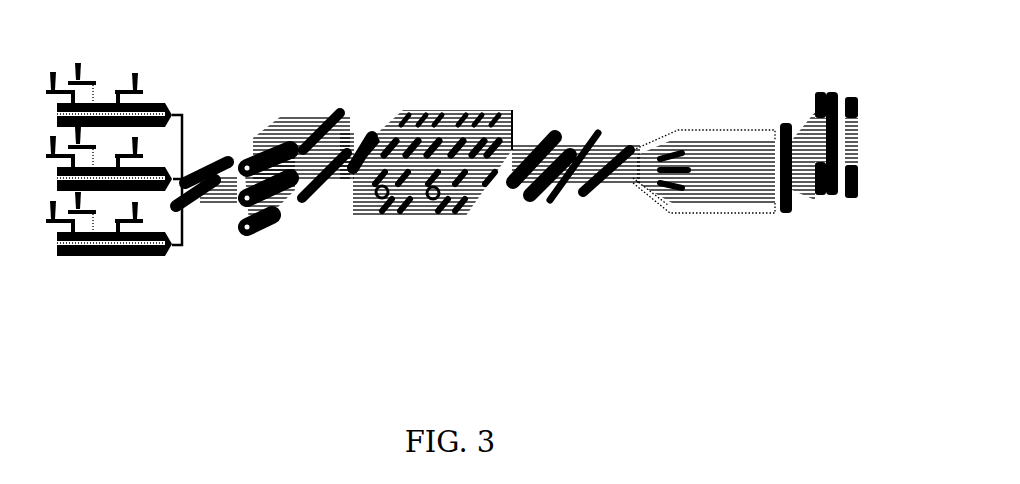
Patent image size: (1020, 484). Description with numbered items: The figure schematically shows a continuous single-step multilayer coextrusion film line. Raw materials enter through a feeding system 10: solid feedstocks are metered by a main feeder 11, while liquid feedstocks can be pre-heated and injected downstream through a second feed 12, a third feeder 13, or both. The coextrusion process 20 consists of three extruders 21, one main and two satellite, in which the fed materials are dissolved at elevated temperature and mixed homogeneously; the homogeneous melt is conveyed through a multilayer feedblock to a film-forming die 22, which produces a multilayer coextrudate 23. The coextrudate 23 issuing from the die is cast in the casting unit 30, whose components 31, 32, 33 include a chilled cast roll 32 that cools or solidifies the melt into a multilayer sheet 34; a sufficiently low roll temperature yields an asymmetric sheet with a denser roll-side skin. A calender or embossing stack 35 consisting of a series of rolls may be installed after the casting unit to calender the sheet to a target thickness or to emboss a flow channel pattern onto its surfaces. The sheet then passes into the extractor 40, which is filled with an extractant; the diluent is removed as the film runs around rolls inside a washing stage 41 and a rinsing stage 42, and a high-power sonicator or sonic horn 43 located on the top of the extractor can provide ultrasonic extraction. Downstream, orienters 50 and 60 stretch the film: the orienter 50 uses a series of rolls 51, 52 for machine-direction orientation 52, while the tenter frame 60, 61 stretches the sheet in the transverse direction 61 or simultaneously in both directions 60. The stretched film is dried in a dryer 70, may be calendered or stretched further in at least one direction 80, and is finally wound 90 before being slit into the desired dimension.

The feeding system 10 is at (107, 70).
The main feeder 11 is at (55, 71).
The second feed 12 is at (93, 151).
The third feeder 13 is at (137, 156).
The coextrusion process 20 is at (103, 263).
The extruders 21 is at (158, 258).
The film-forming die 22 is at (200, 174).
The coextrudate 23 is at (197, 197).
The casting unit 30 is at (254, 220).
The casting unit component 31 is at (259, 229).
The cast roll 32 is at (240, 201).
The casting unit component 33 is at (285, 114).
The multilayer sheet 34 is at (305, 122).
The calender or embossing stack 35 is at (312, 203).
The extractor 40 is at (432, 176).
The washing stage 41 is at (423, 101).
The rinsing stage 42 is at (493, 101).
The sonicator 43 is at (380, 199).
The orienter 50 is at (571, 208).
The roll 51 is at (527, 206).
The machine direction orientation roll 52 is at (573, 205).
The tenter frame orienter 60 is at (704, 191).
The tenter frame 61 is at (674, 158).
The dryer 70 is at (748, 121).
The further calendering or stretching stage 80 is at (807, 195).
The winding 90 is at (841, 203).